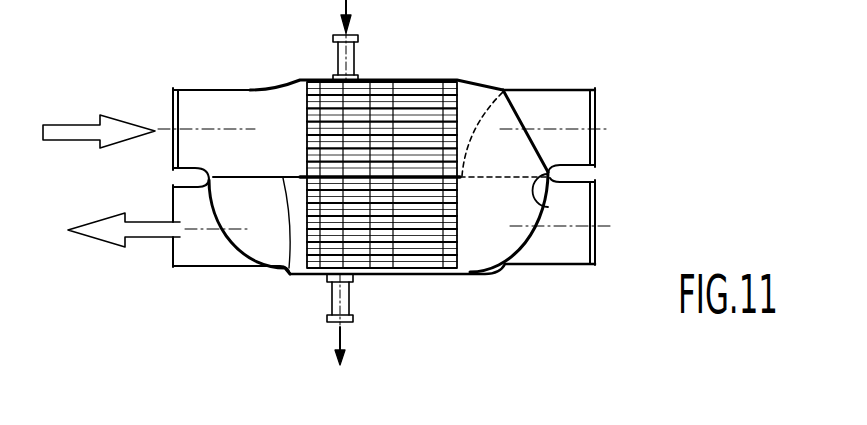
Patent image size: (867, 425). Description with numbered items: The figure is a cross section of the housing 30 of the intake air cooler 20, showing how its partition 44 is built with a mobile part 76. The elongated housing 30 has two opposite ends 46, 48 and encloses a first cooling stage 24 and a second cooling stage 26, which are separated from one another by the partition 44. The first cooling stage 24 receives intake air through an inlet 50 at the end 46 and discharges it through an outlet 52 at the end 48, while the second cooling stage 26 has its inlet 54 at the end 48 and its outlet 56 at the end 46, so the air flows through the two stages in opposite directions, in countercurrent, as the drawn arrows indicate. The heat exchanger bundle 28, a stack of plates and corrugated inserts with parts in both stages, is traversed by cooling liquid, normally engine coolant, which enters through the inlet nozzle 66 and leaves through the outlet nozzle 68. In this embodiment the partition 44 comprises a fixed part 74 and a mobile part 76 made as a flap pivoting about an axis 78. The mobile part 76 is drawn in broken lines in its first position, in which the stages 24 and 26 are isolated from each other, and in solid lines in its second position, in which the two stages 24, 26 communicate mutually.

The cooler 20 is at (274, 83).
The first cooling stage 24 is at (476, 105).
The second cooling stage 26 is at (482, 219).
The heat exchanger bundle 28 is at (406, 238).
The housing 30 is at (428, 78).
The partition 44 is at (250, 182).
The end 46 is at (243, 252).
The end 48 is at (521, 245).
The inlet 50 is at (203, 88).
The outlet 52 is at (572, 89).
The inlet 54 is at (585, 243).
The outlet 56 is at (172, 253).
The inlet nozzle 66 is at (360, 52).
The outlet nozzle 68 is at (353, 292).
The fixed part 74 is at (289, 266).
The mobile part 76 is at (518, 114).
The axis 78 is at (555, 210).